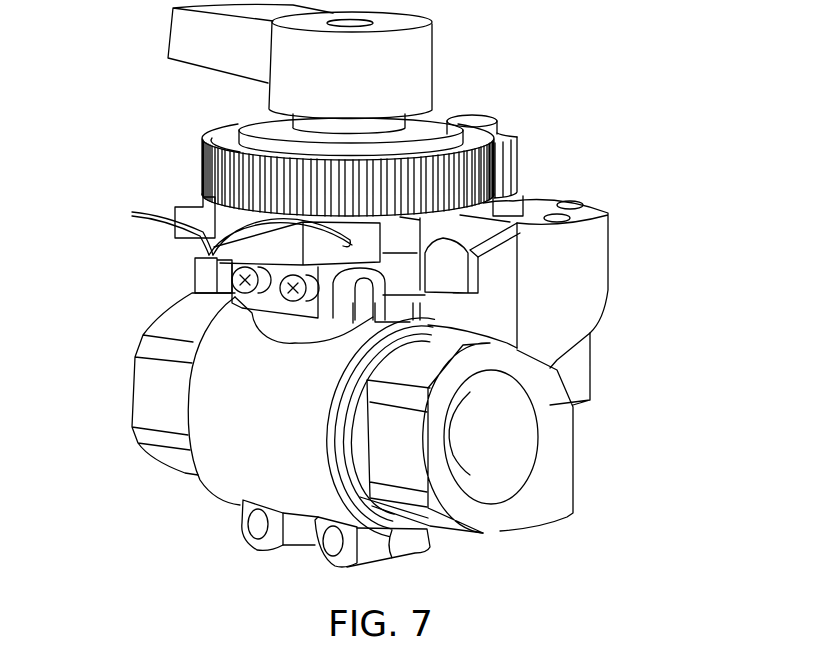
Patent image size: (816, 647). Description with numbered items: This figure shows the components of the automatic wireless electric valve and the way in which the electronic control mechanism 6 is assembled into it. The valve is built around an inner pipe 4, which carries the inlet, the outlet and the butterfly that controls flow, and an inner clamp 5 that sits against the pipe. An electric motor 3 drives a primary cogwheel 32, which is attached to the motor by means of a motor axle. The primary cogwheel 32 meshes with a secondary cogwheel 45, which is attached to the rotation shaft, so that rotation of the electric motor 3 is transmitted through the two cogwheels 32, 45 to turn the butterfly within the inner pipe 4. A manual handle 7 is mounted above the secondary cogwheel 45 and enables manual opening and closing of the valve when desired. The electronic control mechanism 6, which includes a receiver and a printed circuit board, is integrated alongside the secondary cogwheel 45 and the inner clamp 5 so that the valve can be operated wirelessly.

The manual handle 7 is at (420, 62).
The secondary cogwheel 45 is at (230, 142).
The primary cogwheel 32 is at (517, 165).
The electronic control mechanism 6 is at (180, 228).
The inner clamp 5 is at (233, 473).
The inner pipe 4 is at (143, 387).
The electric motor 3 is at (573, 378).